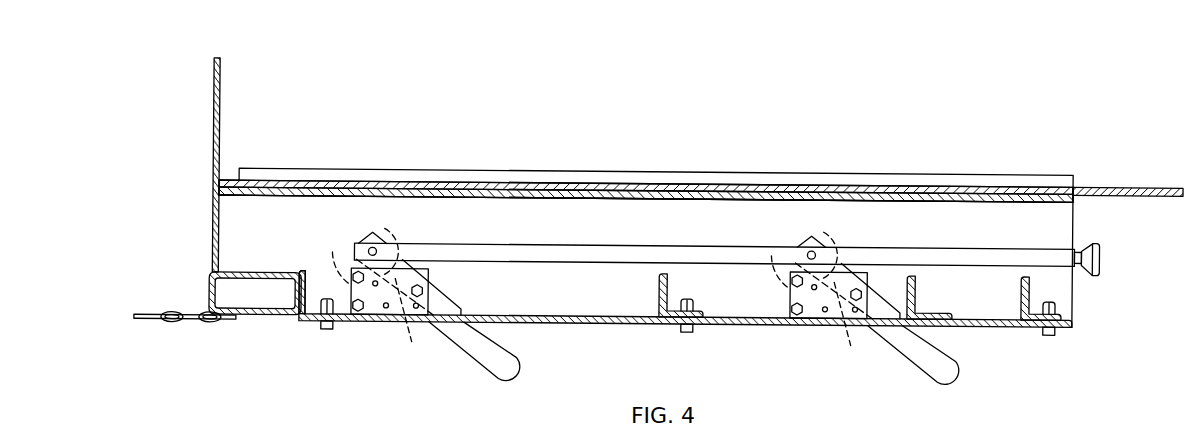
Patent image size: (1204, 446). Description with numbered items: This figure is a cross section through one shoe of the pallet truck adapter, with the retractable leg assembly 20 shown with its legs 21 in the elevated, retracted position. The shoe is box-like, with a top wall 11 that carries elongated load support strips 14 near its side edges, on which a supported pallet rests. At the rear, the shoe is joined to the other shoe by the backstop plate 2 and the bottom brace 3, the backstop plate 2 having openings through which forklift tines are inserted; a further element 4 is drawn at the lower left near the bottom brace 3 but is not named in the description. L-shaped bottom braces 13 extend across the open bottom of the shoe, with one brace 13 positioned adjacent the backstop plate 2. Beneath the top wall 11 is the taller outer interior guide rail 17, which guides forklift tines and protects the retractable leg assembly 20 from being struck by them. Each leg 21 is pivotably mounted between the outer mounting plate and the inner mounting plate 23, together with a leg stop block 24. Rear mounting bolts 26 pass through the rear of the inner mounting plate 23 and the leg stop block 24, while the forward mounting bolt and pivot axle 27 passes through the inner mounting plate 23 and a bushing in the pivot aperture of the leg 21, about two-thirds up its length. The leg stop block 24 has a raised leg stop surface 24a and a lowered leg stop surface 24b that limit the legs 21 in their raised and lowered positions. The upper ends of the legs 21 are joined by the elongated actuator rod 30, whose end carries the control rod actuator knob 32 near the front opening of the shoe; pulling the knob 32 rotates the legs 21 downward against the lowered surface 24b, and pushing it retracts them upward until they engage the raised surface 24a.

The backstop plate 2 is at (231, 118).
The bottom brace 3 is at (210, 296).
The strap 4 is at (190, 320).
The top wall 11 is at (1112, 177).
The bottom brace 13 is at (306, 296).
The load support strip 14 is at (895, 176).
The outer interior guide rail 17 is at (962, 197).
The retractable leg assembly 20 is at (693, 217).
The leg 21 is at (493, 357).
The inner mounting plate 23 is at (386, 316).
The leg stop block 24 is at (599, 277).
The raised leg stop surface 24a is at (388, 234).
The lowered leg stop surface 24b is at (630, 326).
The rear mounting bolt 26 is at (359, 244).
The forward mounting bolt and pivot axle 27 is at (421, 281).
The actuator rod 30 is at (1058, 243).
The control rod actuator knob 32 is at (1100, 249).